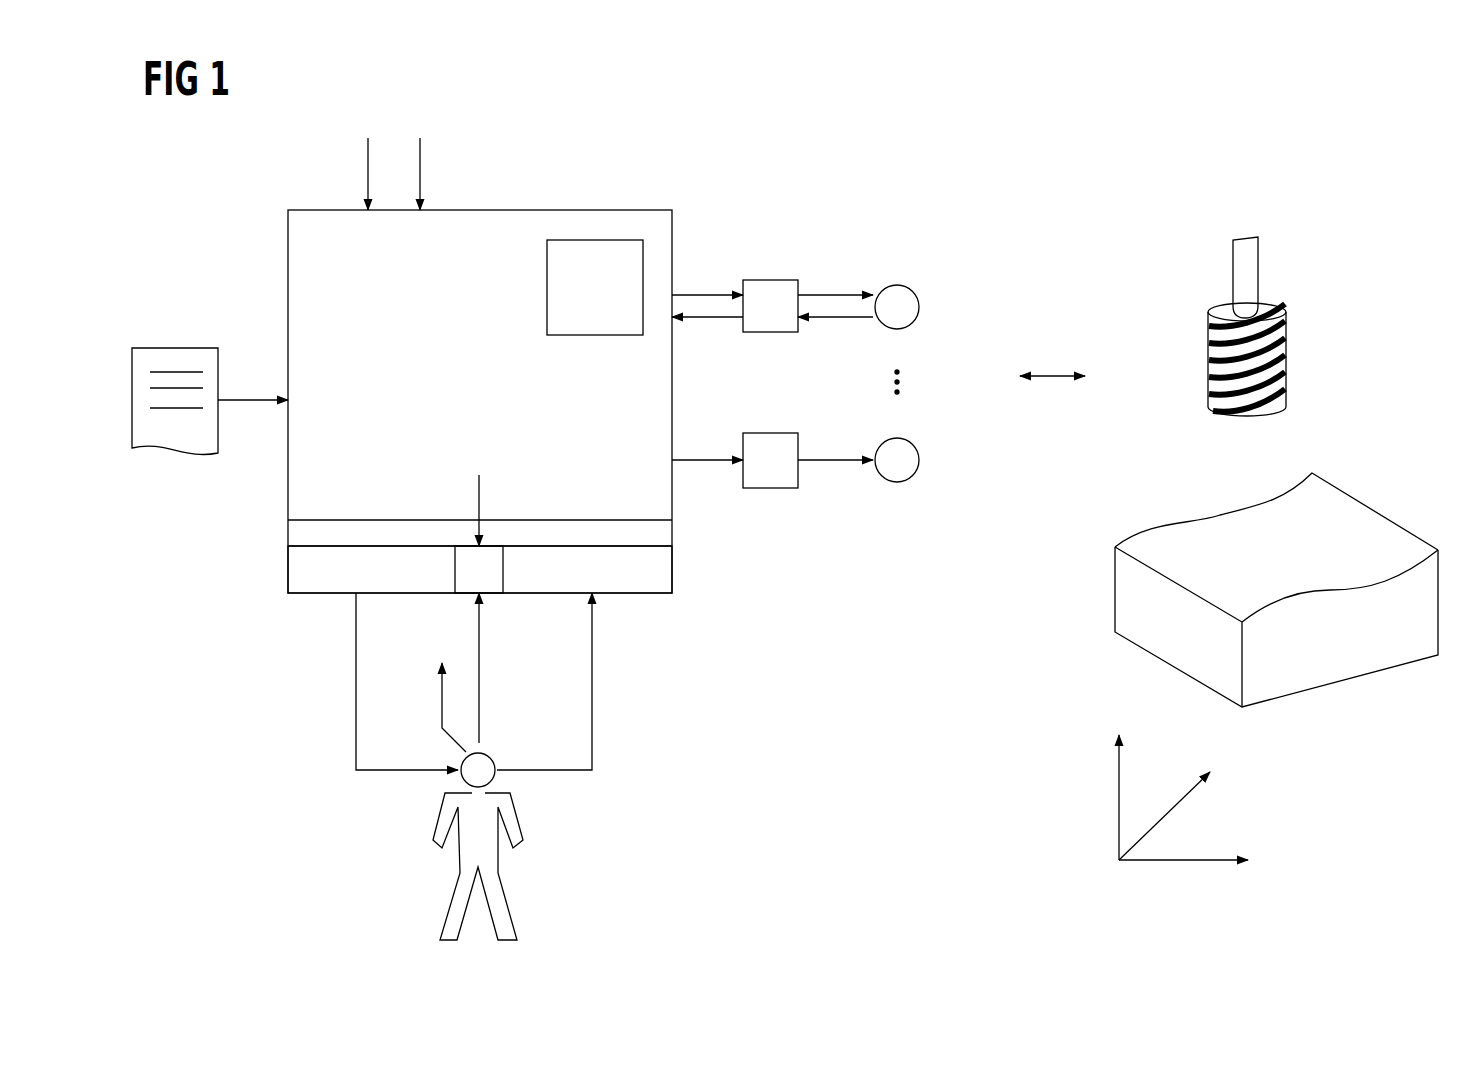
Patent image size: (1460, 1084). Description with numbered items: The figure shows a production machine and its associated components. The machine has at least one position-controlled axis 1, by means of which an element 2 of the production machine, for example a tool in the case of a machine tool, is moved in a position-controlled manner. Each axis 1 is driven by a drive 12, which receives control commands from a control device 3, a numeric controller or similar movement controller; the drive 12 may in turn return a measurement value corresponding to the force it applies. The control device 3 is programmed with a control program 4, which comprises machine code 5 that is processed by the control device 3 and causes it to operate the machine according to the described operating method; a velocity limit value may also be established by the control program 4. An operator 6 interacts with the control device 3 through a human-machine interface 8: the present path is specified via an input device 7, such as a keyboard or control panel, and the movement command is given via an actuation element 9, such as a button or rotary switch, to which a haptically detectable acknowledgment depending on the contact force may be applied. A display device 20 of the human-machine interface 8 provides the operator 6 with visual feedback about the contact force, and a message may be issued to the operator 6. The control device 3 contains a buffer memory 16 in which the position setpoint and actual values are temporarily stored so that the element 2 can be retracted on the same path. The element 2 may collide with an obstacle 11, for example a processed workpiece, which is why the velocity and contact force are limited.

The position-controlled axis 1 is at (920, 305).
The element 2 is at (1207, 367).
The control device 3 is at (572, 210).
The control program 4 is at (175, 348).
The machine code 5 is at (150, 372).
The operator 6 is at (447, 902).
The input device 7 is at (673, 572).
The human-machine interface 8 is at (288, 532).
The actuation element 9 is at (503, 573).
The obstacle 11 is at (1115, 592).
The drive 12 is at (772, 280).
The buffer memory 16 is at (610, 238).
The display device 20 is at (288, 568).